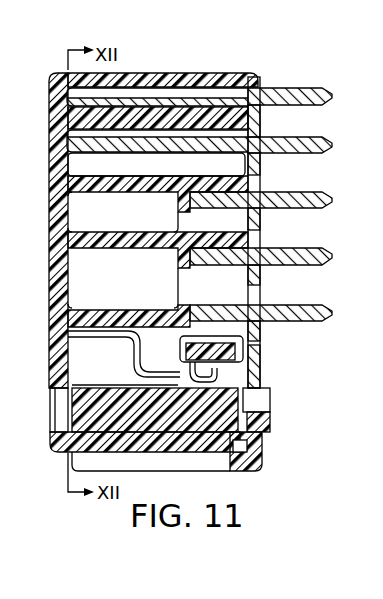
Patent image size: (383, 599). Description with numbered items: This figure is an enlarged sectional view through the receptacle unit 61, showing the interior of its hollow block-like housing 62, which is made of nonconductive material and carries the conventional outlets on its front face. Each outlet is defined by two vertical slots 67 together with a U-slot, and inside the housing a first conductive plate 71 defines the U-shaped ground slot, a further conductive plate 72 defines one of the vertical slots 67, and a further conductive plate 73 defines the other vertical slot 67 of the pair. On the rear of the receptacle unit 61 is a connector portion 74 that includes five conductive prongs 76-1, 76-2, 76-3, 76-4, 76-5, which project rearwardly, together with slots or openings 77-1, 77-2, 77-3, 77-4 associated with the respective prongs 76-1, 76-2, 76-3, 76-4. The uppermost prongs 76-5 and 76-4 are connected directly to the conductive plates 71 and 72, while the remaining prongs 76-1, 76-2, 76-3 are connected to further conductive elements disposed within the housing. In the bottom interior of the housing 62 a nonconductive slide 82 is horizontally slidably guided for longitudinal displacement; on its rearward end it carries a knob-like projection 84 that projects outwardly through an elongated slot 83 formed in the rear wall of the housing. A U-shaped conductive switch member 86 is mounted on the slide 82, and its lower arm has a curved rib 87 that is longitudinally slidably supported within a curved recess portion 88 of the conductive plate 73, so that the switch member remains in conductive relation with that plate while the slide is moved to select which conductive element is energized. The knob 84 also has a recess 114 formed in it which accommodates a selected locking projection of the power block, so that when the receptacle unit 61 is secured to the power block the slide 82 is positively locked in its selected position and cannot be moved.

The receptacle unit 61 is at (225, 64).
The housing 62 is at (56, 97).
The vertical slots 67 is at (382, 301).
The first conductive plate 71 is at (140, 98).
The conductive plate 72 is at (118, 152).
The conductive plate 73 is at (133, 352).
The connector portion 74 is at (290, 66).
The conductive prong 76-1 is at (298, 305).
The conductive prong 76-2 is at (304, 248).
The conductive prong 76-3 is at (303, 192).
The conductive prong 76-4 is at (294, 137).
The conductive prong 76-5 is at (306, 88).
The slot 77-1 is at (257, 332).
The slot 77-2 is at (256, 273).
The slot 77-3 is at (256, 218).
The slot 77-4 is at (256, 164).
The slide 82 is at (232, 450).
The elongated slot 83 is at (272, 395).
The knob-like projection 84 is at (268, 437).
The conductive switch member 86 is at (240, 352).
The curved rib 87 is at (192, 360).
The curved recess portion 88 is at (160, 384).
The recess 114 is at (240, 406).